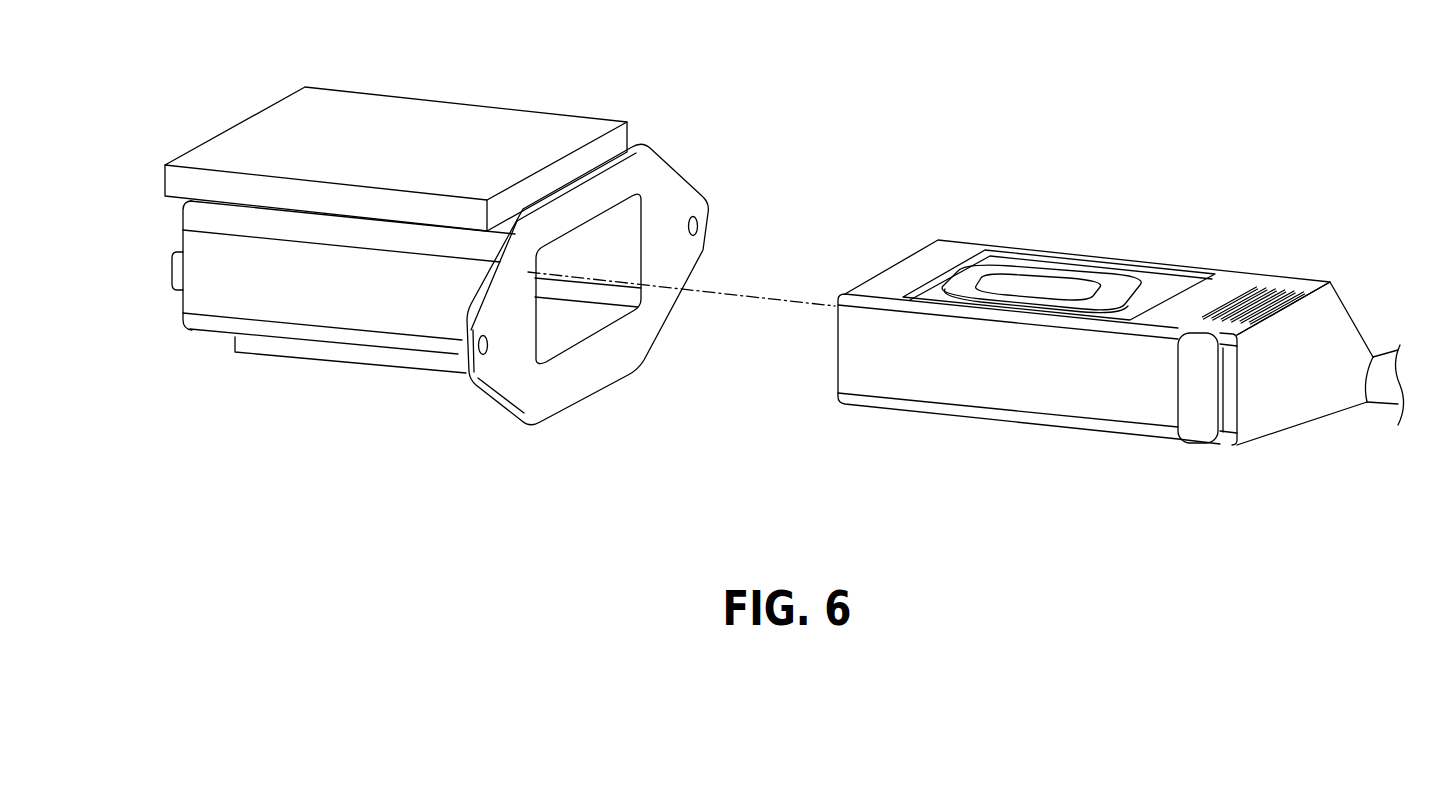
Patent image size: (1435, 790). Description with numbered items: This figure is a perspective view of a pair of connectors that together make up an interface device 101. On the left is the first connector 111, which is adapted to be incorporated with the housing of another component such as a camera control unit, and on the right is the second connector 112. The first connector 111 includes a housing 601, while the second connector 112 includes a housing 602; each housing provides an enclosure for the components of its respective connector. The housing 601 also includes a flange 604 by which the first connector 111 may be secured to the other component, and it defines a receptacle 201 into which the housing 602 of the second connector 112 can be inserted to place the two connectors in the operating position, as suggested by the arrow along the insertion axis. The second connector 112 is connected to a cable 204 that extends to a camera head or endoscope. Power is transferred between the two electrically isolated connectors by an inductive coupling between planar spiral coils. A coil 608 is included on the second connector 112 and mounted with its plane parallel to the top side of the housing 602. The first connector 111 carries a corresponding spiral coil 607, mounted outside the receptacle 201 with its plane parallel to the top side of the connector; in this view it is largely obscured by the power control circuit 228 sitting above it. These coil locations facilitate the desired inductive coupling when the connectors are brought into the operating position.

The interface device 101 is at (573, 83).
The power control circuit 228 is at (456, 113).
The housing 601 is at (247, 305).
The spiral coil 607 is at (327, 217).
The first connector 111 is at (327, 386).
The flange 604 is at (563, 398).
The receptacle 201 is at (560, 316).
The housing 602 is at (1003, 397).
The coil 608 is at (1118, 275).
The second connector 112 is at (1058, 437).
The cable 204 is at (1388, 388).